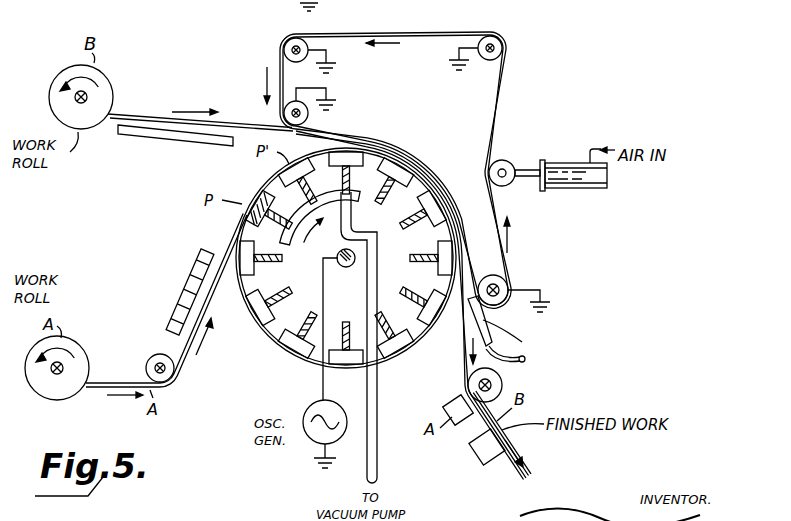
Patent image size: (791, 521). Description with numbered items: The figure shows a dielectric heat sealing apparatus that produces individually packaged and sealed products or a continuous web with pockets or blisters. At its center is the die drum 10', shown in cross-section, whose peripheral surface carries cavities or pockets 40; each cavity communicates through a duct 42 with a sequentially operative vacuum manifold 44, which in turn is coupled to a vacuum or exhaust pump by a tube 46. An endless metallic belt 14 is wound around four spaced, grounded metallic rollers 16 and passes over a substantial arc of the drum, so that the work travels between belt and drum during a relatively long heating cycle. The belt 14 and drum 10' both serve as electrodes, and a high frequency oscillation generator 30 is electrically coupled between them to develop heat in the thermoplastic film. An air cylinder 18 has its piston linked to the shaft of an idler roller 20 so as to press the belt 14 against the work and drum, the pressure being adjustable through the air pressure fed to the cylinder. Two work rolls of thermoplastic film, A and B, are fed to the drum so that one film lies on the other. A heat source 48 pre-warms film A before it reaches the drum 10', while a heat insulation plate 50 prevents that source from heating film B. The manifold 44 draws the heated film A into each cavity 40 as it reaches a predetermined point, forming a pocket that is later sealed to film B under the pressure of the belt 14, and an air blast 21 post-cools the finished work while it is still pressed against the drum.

The drum 10' is at (346, 261).
The endless metallic belt 14 is at (458, 31).
The metallic rollers 16 is at (486, 62).
The air cylinder 18 is at (575, 160).
The idler roller 20 is at (512, 162).
The air blast 21 is at (538, 332).
The high frequency oscillation generator 30 is at (312, 406).
The cavities or pockets 40 is at (424, 308).
The duct 42 is at (288, 264).
The vacuum manifold 44 is at (360, 208).
The tube 46 is at (378, 434).
The heat source 48 is at (177, 302).
The heat insulation plate 50 is at (190, 148).